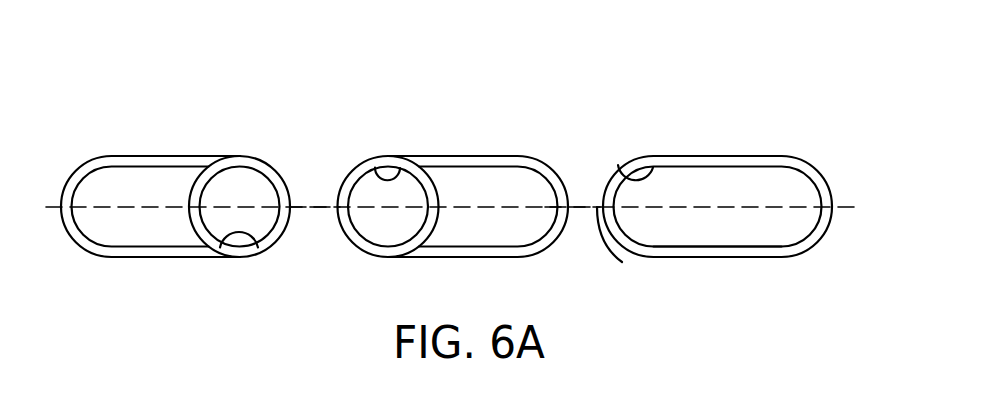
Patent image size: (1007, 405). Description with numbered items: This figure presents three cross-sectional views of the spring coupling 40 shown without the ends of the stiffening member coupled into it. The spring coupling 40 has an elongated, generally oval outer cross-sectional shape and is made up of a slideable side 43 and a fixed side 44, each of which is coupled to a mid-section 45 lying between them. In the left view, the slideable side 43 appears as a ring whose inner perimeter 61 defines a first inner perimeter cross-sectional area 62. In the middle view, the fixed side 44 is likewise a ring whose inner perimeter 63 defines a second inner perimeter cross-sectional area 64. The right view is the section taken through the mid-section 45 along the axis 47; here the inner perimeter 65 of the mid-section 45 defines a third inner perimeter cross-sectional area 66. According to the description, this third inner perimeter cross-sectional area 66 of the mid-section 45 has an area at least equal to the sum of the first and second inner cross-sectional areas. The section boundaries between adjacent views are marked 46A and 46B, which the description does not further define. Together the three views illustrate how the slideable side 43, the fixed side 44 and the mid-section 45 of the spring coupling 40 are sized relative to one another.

The spring coupling 40 is at (167, 128).
The slideable side 43 is at (240, 162).
The fixed side 44 is at (408, 158).
The mid-section 45 is at (703, 156).
The first end face 46A is at (309, 188).
The second end face 46B is at (574, 229).
The axis 47 is at (622, 262).
The inner perimeter 61 is at (258, 248).
The first inner perimeter cross-sectional area 62 is at (262, 224).
The inner perimeter 63 is at (375, 168).
The second inner perimeter cross-sectional area 64 is at (387, 234).
The inner perimeter 65 is at (618, 165).
The third inner perimeter cross-sectional area 66 is at (712, 224).